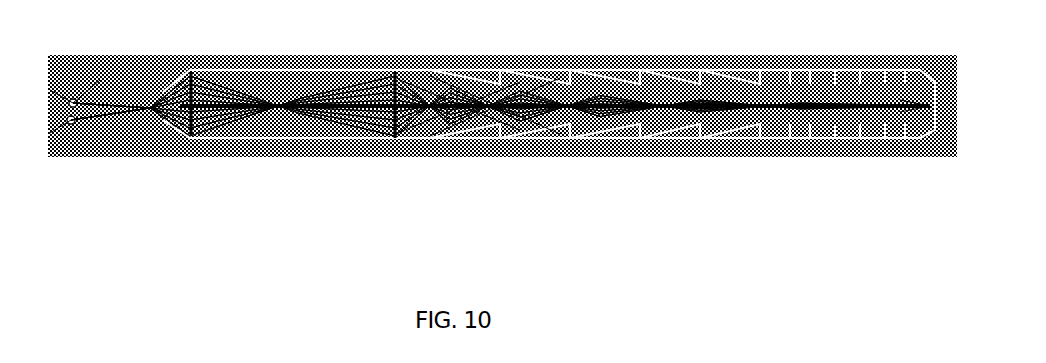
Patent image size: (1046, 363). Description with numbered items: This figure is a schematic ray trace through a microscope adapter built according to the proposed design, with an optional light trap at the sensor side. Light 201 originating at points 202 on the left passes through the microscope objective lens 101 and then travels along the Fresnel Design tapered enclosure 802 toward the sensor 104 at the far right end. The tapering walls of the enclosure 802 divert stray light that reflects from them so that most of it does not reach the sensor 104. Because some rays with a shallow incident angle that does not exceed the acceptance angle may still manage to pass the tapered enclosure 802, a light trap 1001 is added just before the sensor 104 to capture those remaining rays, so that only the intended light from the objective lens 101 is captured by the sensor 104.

The microscope objective lens 101 is at (539, 76).
The Fresnel Design tapered enclosure 802 is at (477, 78).
The sensor 104 is at (928, 65).
The points 202 is at (486, 136).
The light 201 is at (490, 136).
The light trap 1001 is at (549, 133).